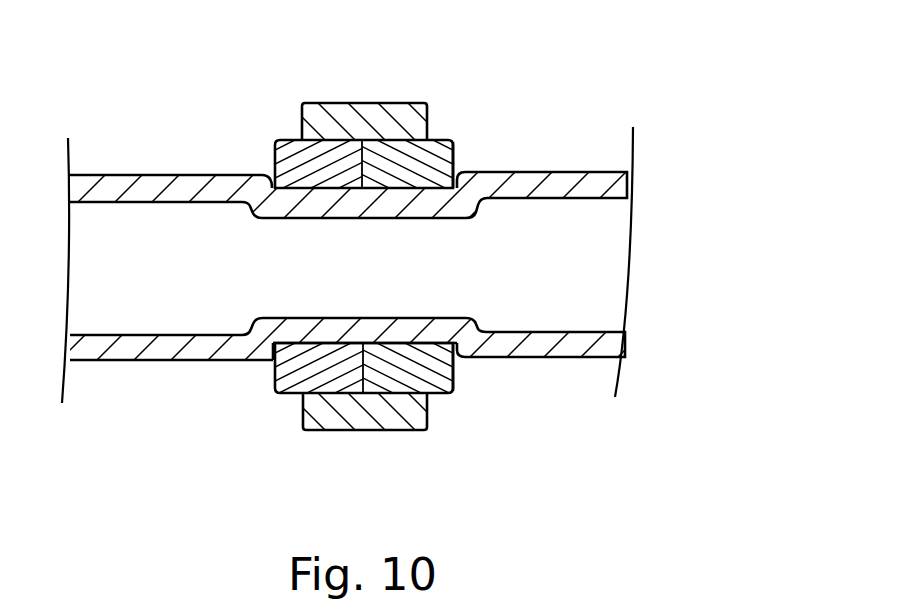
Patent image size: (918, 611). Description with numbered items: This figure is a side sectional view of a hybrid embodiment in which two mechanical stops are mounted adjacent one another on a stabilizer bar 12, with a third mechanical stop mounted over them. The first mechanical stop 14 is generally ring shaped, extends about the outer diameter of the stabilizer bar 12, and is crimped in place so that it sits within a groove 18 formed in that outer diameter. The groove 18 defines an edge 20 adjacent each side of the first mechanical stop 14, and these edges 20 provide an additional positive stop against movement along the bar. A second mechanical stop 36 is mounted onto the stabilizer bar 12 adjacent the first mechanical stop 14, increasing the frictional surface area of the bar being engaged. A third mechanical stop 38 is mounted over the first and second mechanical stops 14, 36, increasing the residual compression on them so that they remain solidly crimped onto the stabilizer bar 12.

The stabilizer bar 12 is at (617, 185).
The first mechanical stop 14 is at (278, 137).
The groove 18 is at (347, 193).
The edge 20 is at (270, 189).
The second mechanical stop 36 is at (440, 137).
The third mechanical stop 38 is at (377, 103).